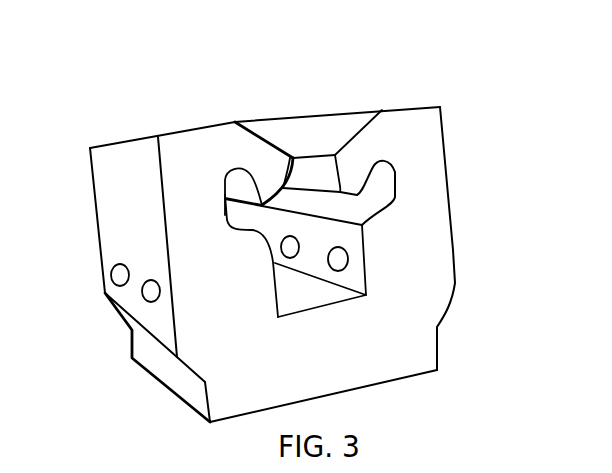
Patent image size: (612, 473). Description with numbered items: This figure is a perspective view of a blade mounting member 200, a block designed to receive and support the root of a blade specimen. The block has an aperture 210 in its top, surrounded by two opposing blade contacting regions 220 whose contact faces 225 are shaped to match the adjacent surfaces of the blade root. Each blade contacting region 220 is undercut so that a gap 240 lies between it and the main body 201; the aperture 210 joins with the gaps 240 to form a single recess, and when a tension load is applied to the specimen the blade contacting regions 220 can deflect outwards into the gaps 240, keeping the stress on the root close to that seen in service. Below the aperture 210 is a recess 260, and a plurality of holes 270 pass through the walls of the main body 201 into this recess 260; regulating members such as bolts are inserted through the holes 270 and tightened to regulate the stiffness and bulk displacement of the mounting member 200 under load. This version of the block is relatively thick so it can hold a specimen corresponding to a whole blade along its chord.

The blade mounting member 200 is at (433, 73).
The main body 201 is at (413, 193).
The aperture 210 is at (257, 98).
The blade contacting region 220 is at (265, 177).
The contact face 225 is at (343, 172).
The gap 240 is at (377, 185).
The recess 260 is at (323, 292).
The holes 270 is at (150, 293).